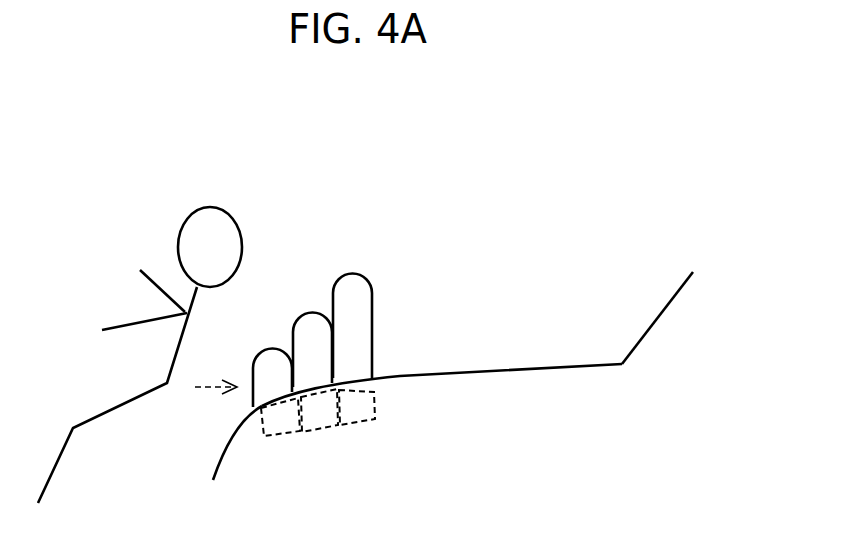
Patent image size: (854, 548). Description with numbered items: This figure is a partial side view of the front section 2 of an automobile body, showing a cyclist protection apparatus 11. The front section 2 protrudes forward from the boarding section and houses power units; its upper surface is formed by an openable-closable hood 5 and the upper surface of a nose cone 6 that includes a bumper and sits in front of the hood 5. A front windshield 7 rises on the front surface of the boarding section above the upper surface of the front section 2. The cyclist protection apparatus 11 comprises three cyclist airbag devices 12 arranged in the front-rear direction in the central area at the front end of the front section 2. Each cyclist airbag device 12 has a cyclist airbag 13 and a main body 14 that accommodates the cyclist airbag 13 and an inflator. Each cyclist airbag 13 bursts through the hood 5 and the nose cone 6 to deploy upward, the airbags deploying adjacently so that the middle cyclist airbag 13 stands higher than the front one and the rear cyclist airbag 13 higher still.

The front section 2 is at (460, 380).
The hood 5 is at (480, 372).
The nose cone 6 is at (240, 428).
The front windshield 7 is at (642, 335).
The cyclist protection apparatus 11 is at (322, 236).
The cyclist airbag device 12 is at (320, 268).
The cyclist airbag 13 is at (262, 353).
The main body 14 is at (287, 432).